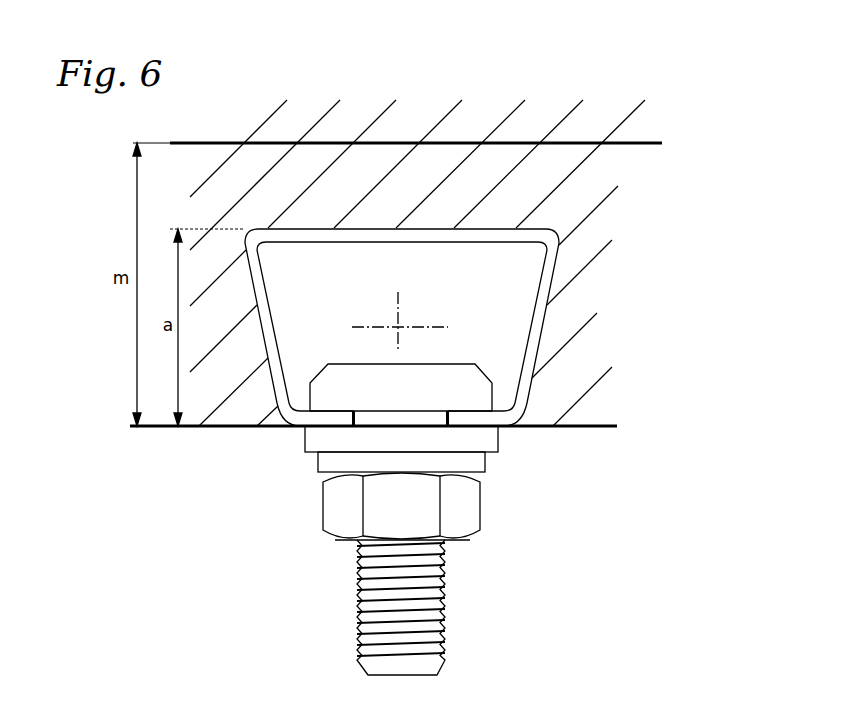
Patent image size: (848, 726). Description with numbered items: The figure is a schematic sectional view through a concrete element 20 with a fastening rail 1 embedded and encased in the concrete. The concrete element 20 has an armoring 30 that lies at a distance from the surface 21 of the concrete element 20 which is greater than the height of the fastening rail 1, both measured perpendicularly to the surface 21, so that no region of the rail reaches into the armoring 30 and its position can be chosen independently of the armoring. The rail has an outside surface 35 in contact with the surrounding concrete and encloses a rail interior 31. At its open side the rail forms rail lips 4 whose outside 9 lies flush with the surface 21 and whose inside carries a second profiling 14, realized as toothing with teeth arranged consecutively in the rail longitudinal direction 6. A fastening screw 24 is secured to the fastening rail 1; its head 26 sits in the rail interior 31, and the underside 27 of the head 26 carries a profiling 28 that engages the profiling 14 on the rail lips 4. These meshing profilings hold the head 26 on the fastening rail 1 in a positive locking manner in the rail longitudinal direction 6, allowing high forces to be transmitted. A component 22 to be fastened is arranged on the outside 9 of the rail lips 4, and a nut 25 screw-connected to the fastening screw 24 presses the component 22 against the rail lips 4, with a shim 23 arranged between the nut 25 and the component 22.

The fastening rail 1 is at (548, 318).
The rail lips 4 is at (478, 418).
The rail longitudinal direction 6 is at (397, 327).
The outside 9 is at (503, 431).
The second profiling 14 is at (300, 400).
The concrete element 20 is at (590, 415).
The surface 21 is at (242, 432).
The component 22 is at (480, 435).
The shim 23 is at (477, 463).
The fastening screw 24 is at (430, 605).
The nut 25 is at (463, 517).
The head 26 is at (458, 387).
The underside 27 is at (316, 413).
The profiling 28 is at (340, 430).
The armoring 30 is at (640, 142).
The rail interior 31 is at (457, 272).
The outside surface 35 is at (560, 267).